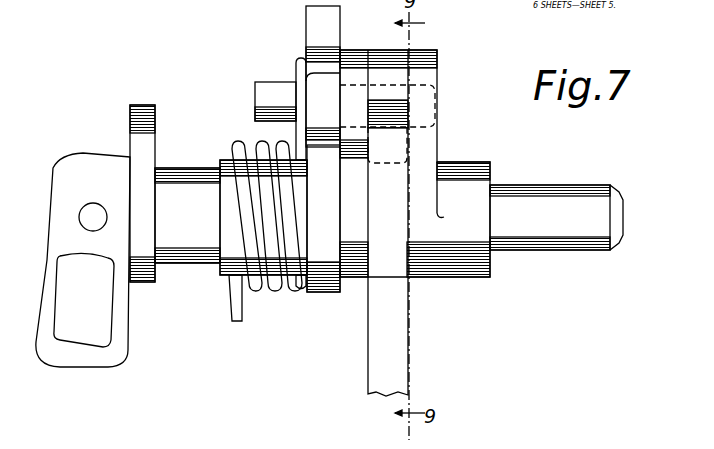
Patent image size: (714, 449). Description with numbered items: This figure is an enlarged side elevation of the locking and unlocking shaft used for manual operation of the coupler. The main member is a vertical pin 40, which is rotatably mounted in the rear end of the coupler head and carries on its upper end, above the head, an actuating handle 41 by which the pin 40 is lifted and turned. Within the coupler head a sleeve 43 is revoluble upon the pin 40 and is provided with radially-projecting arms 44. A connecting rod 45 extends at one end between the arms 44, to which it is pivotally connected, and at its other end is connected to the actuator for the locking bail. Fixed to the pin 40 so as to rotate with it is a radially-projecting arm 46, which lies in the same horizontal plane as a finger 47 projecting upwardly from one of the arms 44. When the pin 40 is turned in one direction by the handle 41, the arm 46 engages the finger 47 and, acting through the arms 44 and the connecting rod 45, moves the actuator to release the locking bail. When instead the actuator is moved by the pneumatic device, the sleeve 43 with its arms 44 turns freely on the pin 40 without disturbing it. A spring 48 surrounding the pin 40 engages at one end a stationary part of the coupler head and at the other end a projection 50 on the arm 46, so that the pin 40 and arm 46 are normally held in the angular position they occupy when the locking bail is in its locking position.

The vertical pin 40 is at (553, 232).
The actuating handle 41 is at (425, 65).
The sleeve 43 is at (467, 258).
The radially-projecting arms 44 is at (352, 62).
The connecting rod 45 is at (392, 347).
The radially-projecting arm 46 is at (306, 24).
The finger 47 is at (320, 99).
The spring 48 is at (232, 297).
The projection 50 is at (268, 90).